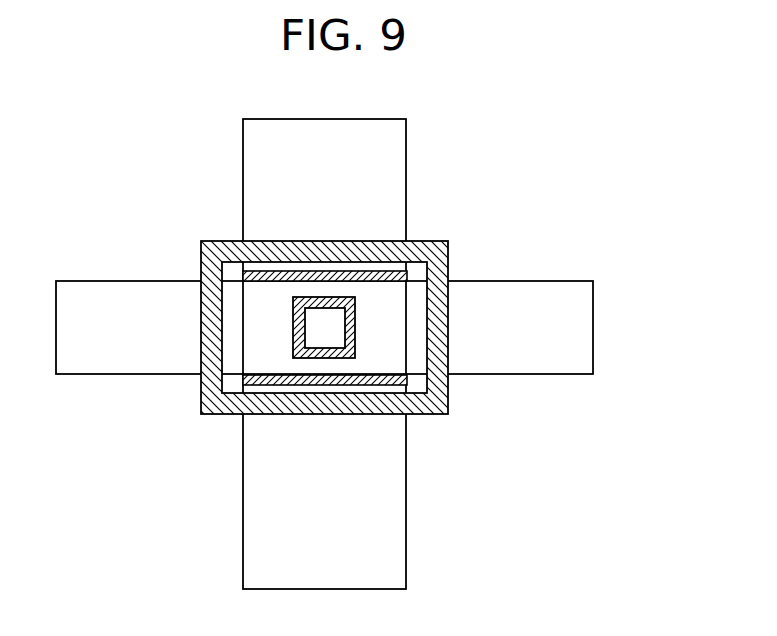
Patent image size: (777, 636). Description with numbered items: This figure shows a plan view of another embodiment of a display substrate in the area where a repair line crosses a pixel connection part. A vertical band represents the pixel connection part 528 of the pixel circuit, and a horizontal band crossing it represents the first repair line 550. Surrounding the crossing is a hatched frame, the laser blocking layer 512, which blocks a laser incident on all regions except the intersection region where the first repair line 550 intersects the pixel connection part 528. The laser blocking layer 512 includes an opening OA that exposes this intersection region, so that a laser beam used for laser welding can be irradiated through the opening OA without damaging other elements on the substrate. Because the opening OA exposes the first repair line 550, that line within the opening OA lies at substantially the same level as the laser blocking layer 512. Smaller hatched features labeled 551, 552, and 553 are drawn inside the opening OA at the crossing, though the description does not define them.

The pixel connection part 528 is at (401, 166).
The first repair line 550 is at (583, 330).
The laser blocking layer 512 is at (447, 268).
The opening OA is at (202, 252).
The contact hole 551 is at (325, 328).
The connection electrode 552 is at (293, 331).
The auxiliary electrode 553 is at (244, 383).